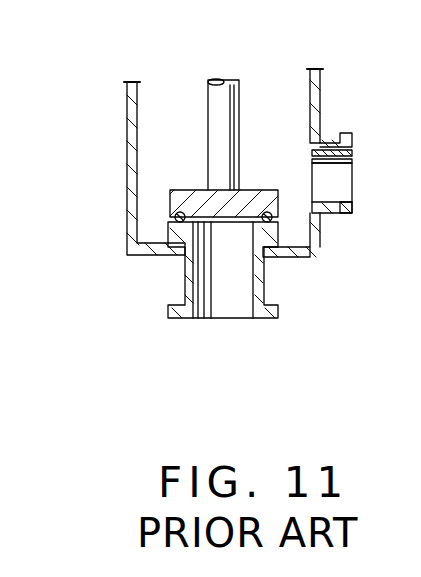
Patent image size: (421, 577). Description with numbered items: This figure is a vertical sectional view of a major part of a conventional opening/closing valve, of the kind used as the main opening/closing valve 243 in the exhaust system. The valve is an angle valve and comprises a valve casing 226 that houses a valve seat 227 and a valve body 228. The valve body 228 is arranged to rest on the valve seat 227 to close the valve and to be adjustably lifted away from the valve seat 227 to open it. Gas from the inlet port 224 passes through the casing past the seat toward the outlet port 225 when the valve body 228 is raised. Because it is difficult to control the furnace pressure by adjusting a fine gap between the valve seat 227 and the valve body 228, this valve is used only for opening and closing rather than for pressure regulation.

The inlet port 224 is at (222, 307).
The outlet port 225 is at (345, 190).
The valve casing 226 is at (126, 118).
The valve seat 227 is at (172, 218).
The valve body 228 is at (188, 190).
The main opening/closing valve 243 is at (327, 100).